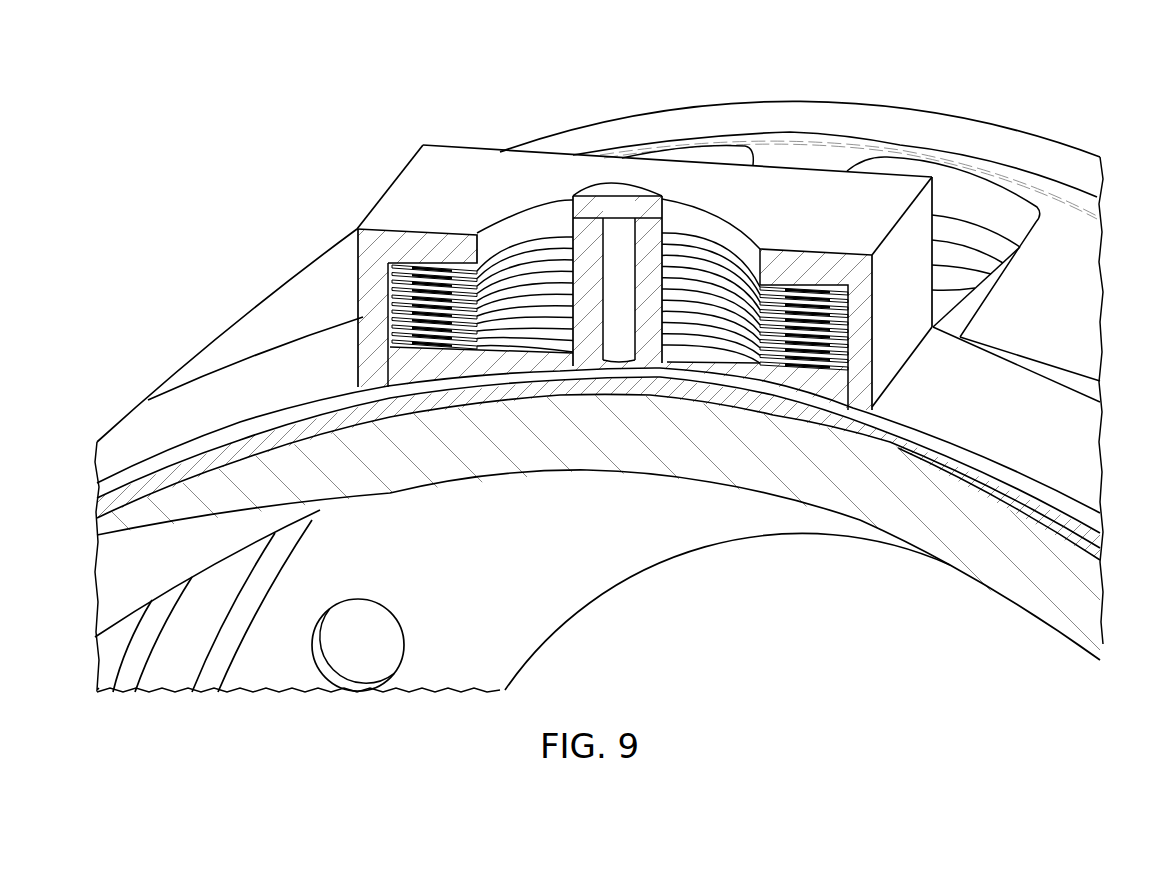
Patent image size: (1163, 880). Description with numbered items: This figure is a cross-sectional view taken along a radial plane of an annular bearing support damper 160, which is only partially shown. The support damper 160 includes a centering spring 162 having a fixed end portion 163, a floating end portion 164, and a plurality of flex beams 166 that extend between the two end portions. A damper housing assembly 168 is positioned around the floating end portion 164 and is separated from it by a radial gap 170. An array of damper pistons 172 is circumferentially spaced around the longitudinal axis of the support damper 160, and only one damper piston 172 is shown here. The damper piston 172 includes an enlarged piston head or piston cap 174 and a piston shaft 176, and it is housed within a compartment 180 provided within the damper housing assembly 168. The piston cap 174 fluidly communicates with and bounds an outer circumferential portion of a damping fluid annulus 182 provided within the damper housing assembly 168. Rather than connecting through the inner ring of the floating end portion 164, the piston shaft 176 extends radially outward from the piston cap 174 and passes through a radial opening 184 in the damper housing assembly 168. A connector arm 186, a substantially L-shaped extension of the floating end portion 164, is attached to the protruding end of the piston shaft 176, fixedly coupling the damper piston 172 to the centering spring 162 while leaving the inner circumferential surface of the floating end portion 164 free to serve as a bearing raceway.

The annular bearing support damper 160 is at (160, 180).
The centering spring 162 is at (1057, 144).
The fixed end portion 163 is at (933, 115).
The floating end portion 164 is at (98, 576).
The flex beams 166 is at (1053, 223).
The damper housing assembly 168 is at (826, 175).
The radial gap 170 is at (583, 396).
The damper piston 172 is at (730, 266).
The piston cap 174 is at (824, 288).
The piston shaft 176 is at (586, 228).
The compartment 180 is at (389, 294).
The damping fluid annulus 182 is at (1100, 540).
The radial opening 184 is at (493, 232).
The connector arm 186 is at (652, 191).